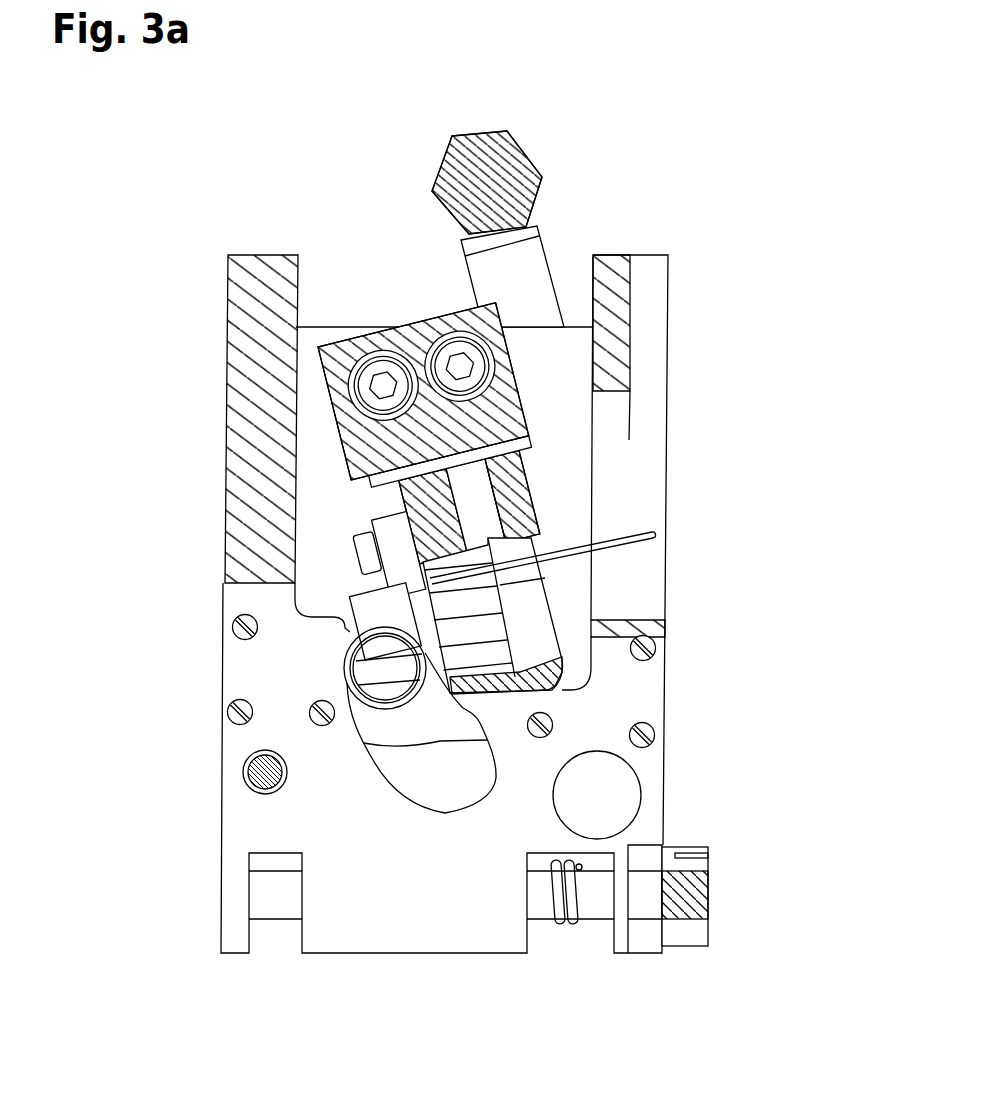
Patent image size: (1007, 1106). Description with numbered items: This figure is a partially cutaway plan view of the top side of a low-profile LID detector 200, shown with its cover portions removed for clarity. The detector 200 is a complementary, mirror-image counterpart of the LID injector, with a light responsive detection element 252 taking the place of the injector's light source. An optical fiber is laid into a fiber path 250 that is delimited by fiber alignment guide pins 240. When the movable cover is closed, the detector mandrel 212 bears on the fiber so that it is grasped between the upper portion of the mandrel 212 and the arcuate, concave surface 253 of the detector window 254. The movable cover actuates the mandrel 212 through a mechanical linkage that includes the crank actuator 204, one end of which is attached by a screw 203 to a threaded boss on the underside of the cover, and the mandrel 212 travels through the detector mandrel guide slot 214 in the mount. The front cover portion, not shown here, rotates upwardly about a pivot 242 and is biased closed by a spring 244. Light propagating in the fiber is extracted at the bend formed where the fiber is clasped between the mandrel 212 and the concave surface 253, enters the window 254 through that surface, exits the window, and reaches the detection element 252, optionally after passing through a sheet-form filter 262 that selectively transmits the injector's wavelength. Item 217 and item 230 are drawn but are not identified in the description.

The LID detector 200 is at (184, 216).
The screw 203 is at (500, 177).
The crank actuator 204 is at (537, 267).
The detector mandrel 212 is at (388, 688).
The detector mandrel guide slot 214 is at (452, 768).
The clamping block 217 is at (500, 468).
The rod 230 is at (641, 534).
The fiber alignment guide pins 240 is at (234, 625).
The pivot 242 is at (637, 892).
The spring 244 is at (571, 926).
The fiber path 250 is at (258, 670).
The light responsive detection element 252 is at (480, 599).
The concave surface 253 is at (362, 628).
The detector window 254 is at (398, 610).
The filter 262 is at (420, 577).